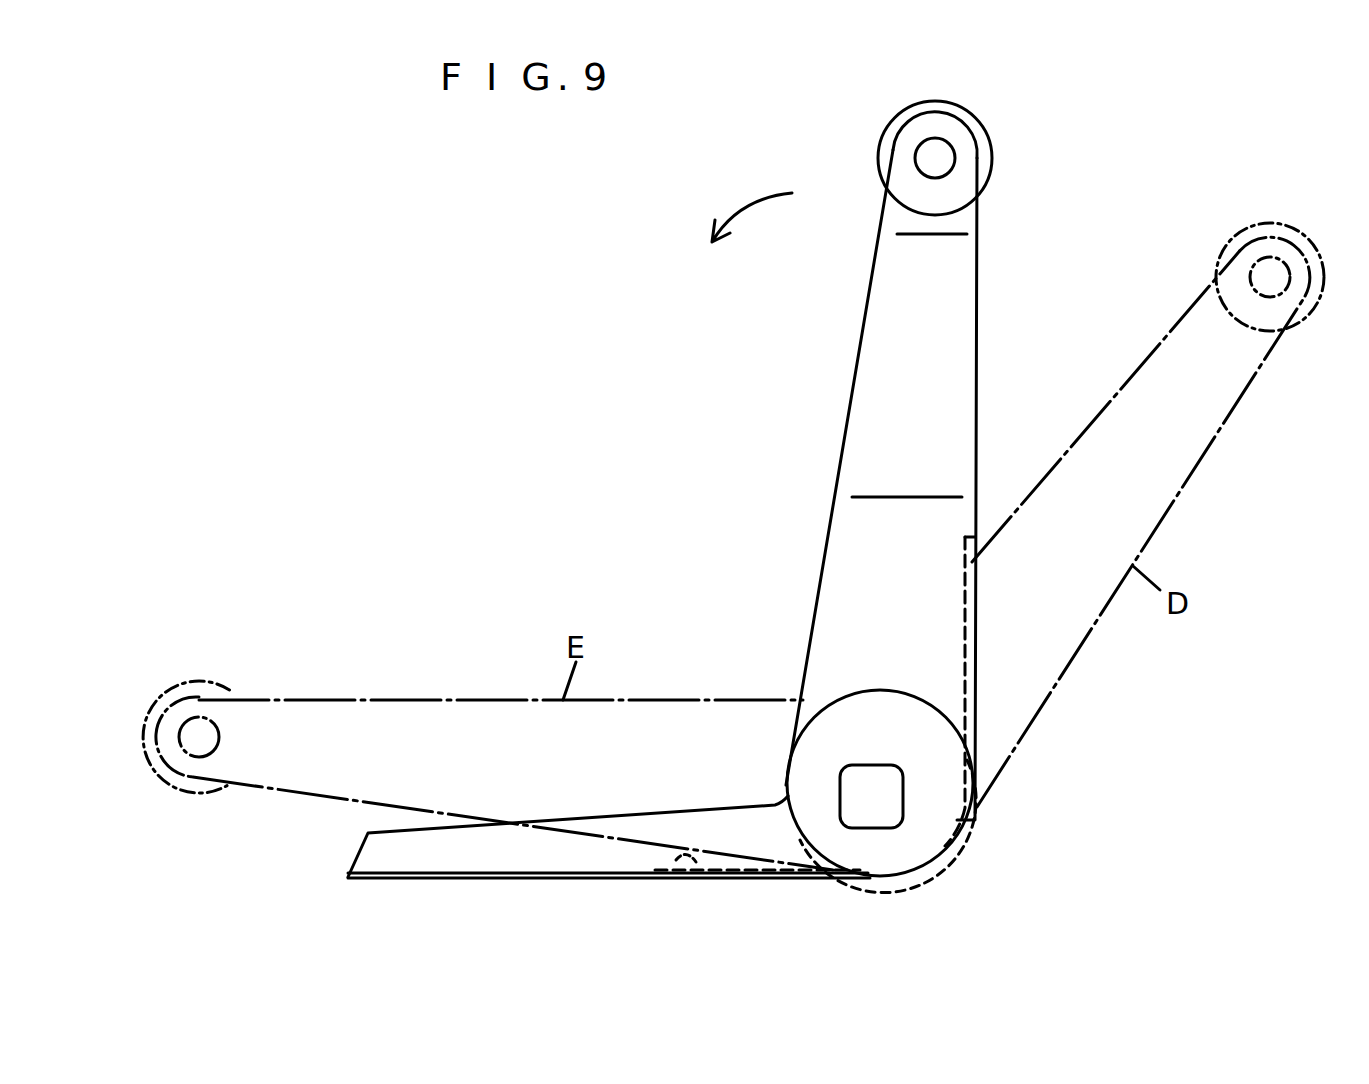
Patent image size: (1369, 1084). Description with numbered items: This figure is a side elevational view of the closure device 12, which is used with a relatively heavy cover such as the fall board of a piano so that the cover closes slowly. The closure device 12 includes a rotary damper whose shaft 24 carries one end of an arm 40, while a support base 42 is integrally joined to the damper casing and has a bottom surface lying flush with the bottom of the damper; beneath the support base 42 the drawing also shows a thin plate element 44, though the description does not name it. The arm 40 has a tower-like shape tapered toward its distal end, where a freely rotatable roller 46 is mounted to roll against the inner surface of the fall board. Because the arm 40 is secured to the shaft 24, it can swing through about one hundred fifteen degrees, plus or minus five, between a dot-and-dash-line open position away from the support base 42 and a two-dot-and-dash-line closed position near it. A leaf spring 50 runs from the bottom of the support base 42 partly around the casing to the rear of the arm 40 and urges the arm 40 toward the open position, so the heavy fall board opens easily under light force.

The closure device 12 is at (670, 529).
The shaft 24 is at (885, 803).
The arm 40 is at (421, 704).
The support base 42 is at (662, 825).
The base plate 44 is at (527, 879).
The roller 46 is at (893, 137).
The leaf spring 50 is at (965, 665).